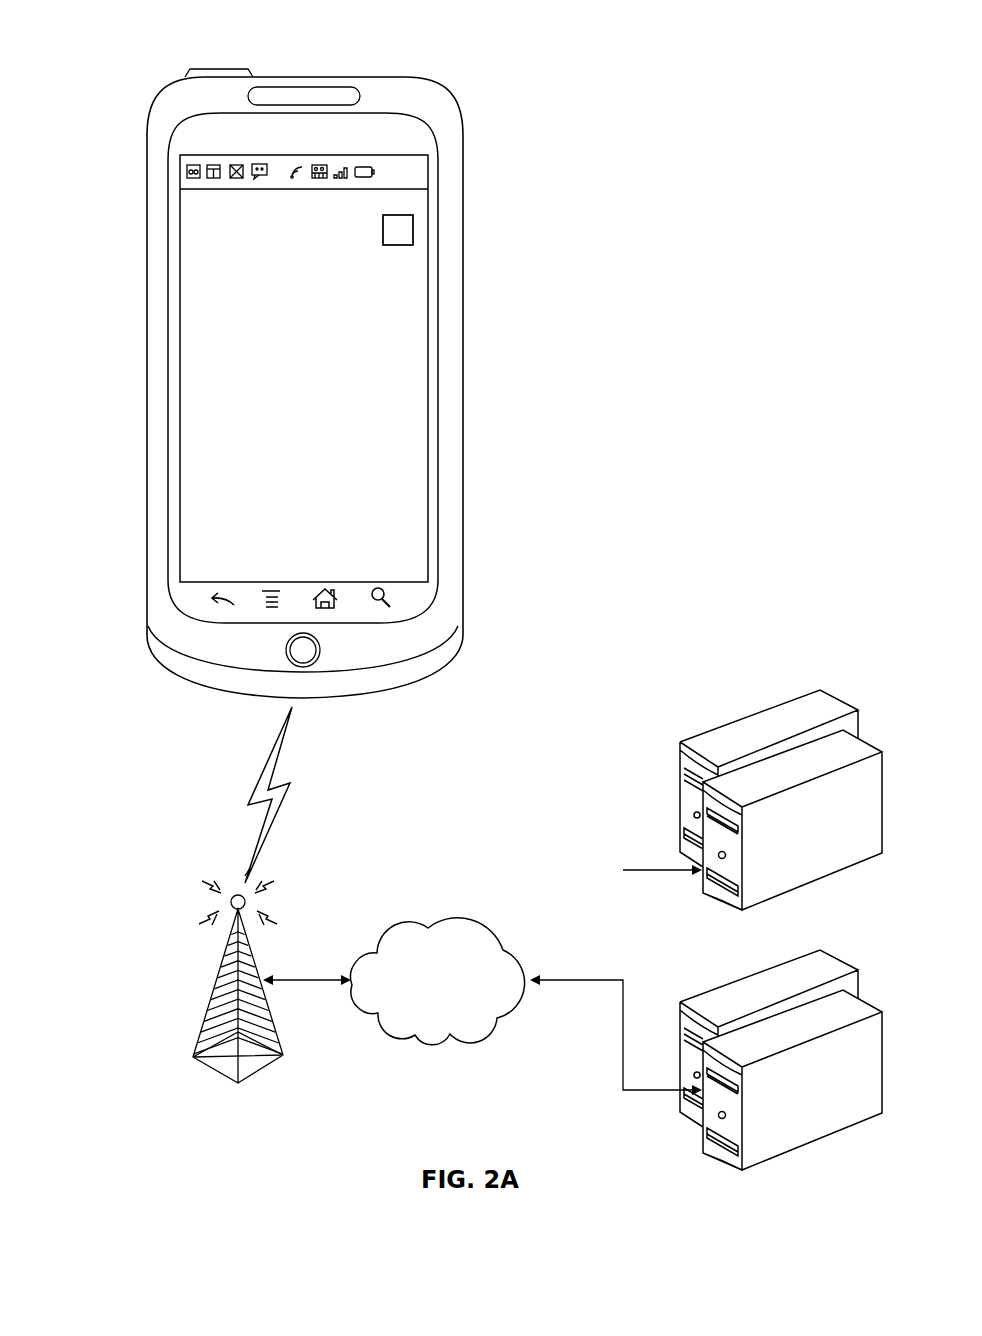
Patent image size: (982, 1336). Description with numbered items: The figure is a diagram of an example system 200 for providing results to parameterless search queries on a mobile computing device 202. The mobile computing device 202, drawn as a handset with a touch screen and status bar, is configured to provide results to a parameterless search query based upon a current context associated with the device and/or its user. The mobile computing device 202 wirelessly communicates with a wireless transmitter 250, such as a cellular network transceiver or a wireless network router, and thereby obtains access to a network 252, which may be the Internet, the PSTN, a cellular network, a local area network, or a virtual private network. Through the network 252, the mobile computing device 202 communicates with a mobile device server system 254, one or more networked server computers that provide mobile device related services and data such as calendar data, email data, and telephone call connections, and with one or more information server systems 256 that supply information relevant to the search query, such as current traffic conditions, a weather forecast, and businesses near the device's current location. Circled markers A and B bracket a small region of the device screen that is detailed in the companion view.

The system 200 is at (130, 43).
The mobile computing device 202 is at (135, 120).
The wireless transmitter 250 is at (226, 979).
The network 252 is at (437, 922).
The mobile device server system 254 is at (822, 893).
The information server systems 256 is at (823, 1158).
The callout marker A is at (383, 215).
The callout marker B is at (383, 245).